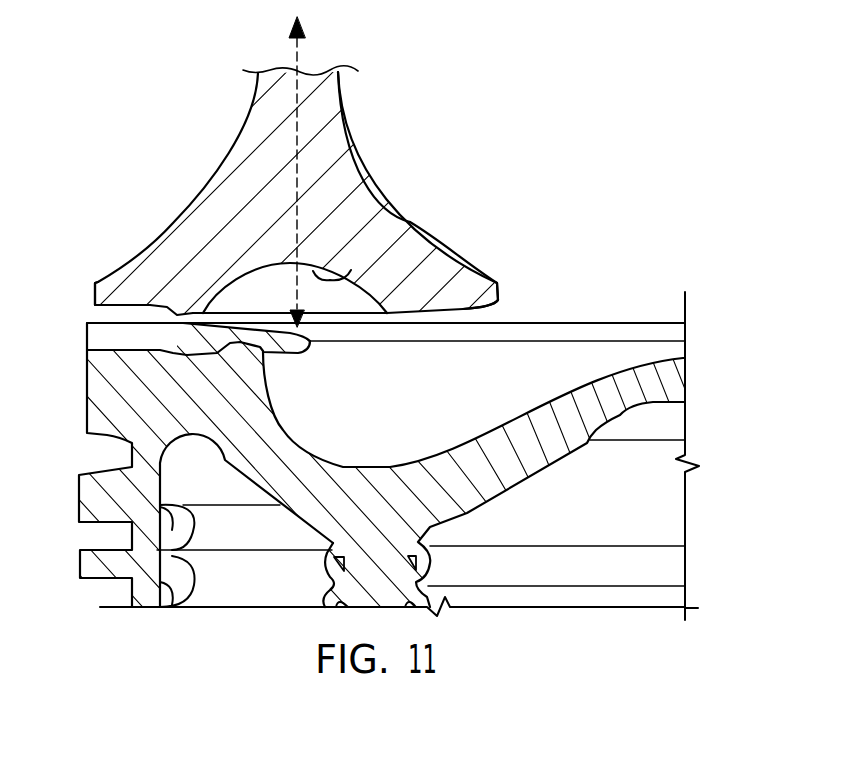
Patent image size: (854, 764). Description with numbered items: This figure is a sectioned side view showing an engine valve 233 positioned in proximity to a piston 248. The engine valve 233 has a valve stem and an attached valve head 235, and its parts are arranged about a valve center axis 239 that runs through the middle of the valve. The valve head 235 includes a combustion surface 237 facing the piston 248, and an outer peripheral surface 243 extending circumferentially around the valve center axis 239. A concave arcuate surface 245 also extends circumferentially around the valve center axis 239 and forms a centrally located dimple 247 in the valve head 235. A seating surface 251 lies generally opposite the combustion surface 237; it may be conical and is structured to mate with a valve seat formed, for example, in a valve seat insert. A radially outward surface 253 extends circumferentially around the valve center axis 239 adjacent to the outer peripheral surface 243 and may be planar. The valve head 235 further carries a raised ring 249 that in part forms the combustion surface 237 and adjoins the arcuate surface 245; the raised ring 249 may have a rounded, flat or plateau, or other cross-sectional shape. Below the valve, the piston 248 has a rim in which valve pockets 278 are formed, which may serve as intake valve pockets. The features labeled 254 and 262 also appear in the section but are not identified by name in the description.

The engine valve 233 is at (340, 101).
The valve center axis 239 is at (298, 52).
The concave arcuate surface 245 is at (406, 219).
The valve head 235 is at (451, 279).
The outer peripheral surface 243 is at (500, 284).
The centrally located dimple 247 is at (262, 293).
The seating surface 251 is at (100, 282).
The combustion surface 237 is at (448, 311).
The radially outward surface 253 is at (122, 308).
The piston 248 is at (701, 340).
The seal rings 254 is at (92, 426).
The raised ring 249 is at (183, 320).
The cavity 262 is at (397, 436).
The valve pockets 278 is at (116, 338).